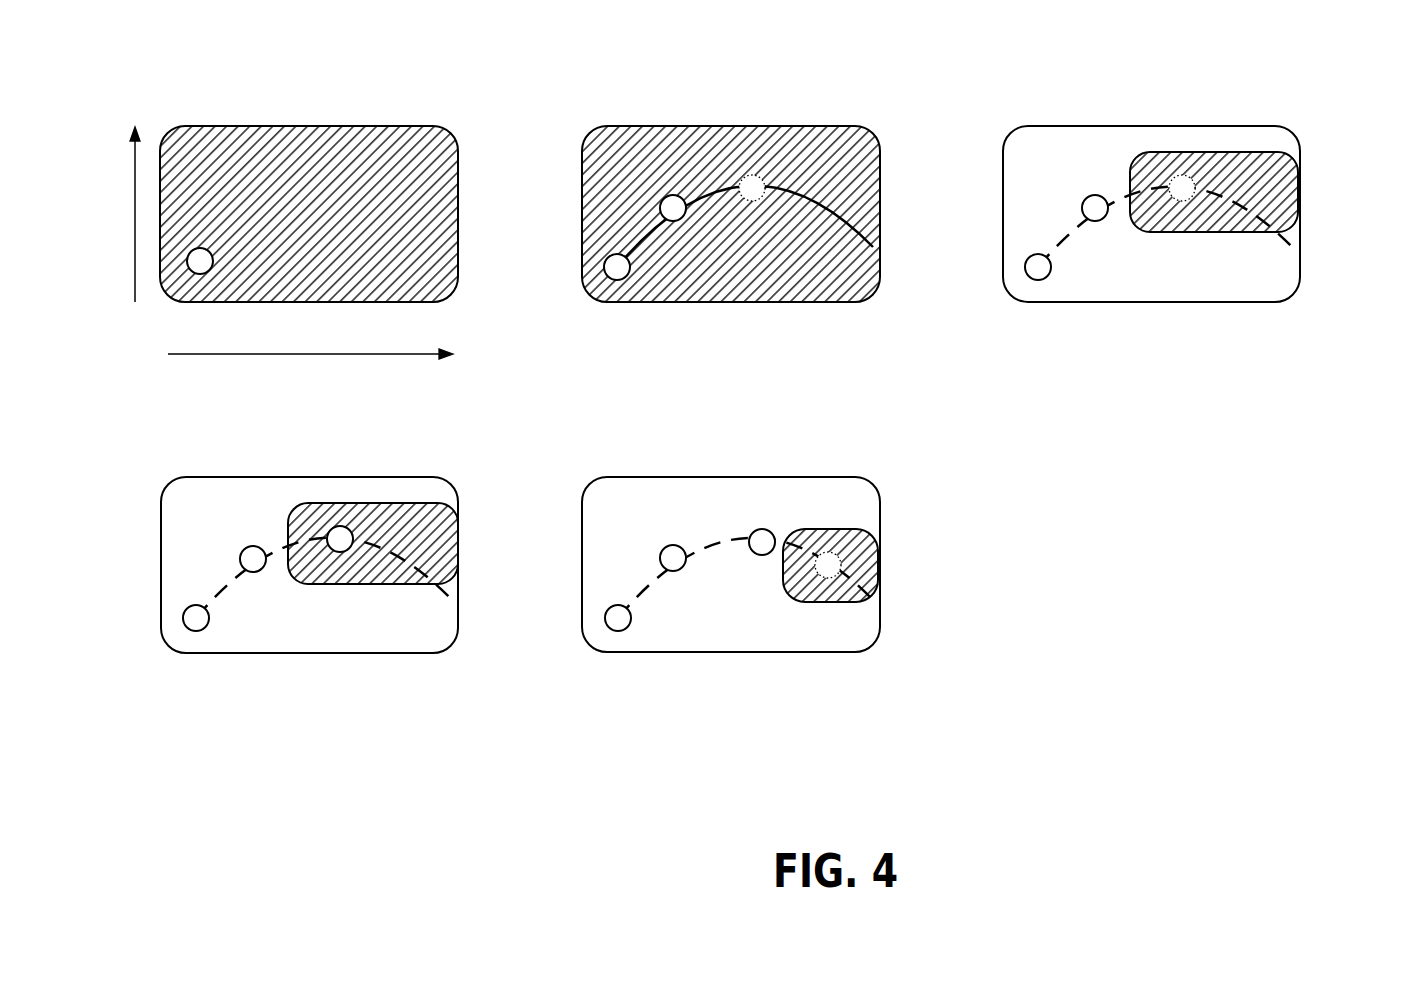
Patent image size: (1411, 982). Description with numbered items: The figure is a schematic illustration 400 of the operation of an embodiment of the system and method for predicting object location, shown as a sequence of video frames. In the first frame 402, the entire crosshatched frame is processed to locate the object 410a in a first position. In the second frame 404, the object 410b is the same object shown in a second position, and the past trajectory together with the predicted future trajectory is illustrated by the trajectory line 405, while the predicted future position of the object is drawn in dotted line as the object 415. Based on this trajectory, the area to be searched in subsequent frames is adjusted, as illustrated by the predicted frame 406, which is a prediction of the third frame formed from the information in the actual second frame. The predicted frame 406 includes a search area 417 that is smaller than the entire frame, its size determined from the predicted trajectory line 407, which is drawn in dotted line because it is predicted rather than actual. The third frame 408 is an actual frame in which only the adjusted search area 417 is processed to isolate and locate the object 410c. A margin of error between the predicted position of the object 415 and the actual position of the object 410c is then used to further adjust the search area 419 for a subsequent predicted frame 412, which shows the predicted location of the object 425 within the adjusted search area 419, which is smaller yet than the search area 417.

The sequence of touch input frames 400 is at (190, 57).
The first frame 402 is at (355, 126).
The second frame 404 is at (772, 126).
The trajectory line 405 is at (855, 224).
The predicted frame 406 is at (1200, 126).
The predicted trajectory line 407 is at (1287, 236).
The third frame 408 is at (372, 477).
The object 410a is at (212, 260).
The object 410b is at (660, 210).
The object 410c is at (345, 528).
The predicted frame 412 is at (773, 477).
The object 415 is at (757, 176).
The search area 417 is at (1273, 152).
The search area 419 is at (852, 532).
The object 425 is at (816, 564).